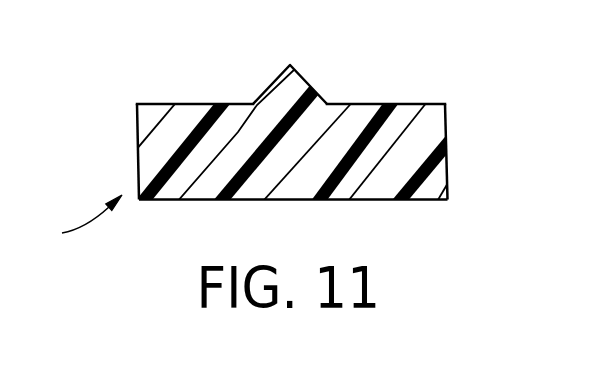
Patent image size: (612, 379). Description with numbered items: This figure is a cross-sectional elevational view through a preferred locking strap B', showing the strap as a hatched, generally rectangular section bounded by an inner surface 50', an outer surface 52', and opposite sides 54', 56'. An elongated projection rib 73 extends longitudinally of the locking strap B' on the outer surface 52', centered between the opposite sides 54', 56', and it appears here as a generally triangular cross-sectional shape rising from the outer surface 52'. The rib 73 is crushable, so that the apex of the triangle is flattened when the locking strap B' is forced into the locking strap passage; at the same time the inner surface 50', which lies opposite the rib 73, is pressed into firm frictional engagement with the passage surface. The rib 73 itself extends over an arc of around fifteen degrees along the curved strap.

The inner surface 50' is at (292, 132).
The elongated projection rib 73 is at (269, 87).
The side 54' is at (104, 152).
The side 56' is at (479, 152).
The outer surface 52' is at (293, 225).
The locking strap B' is at (80, 222).